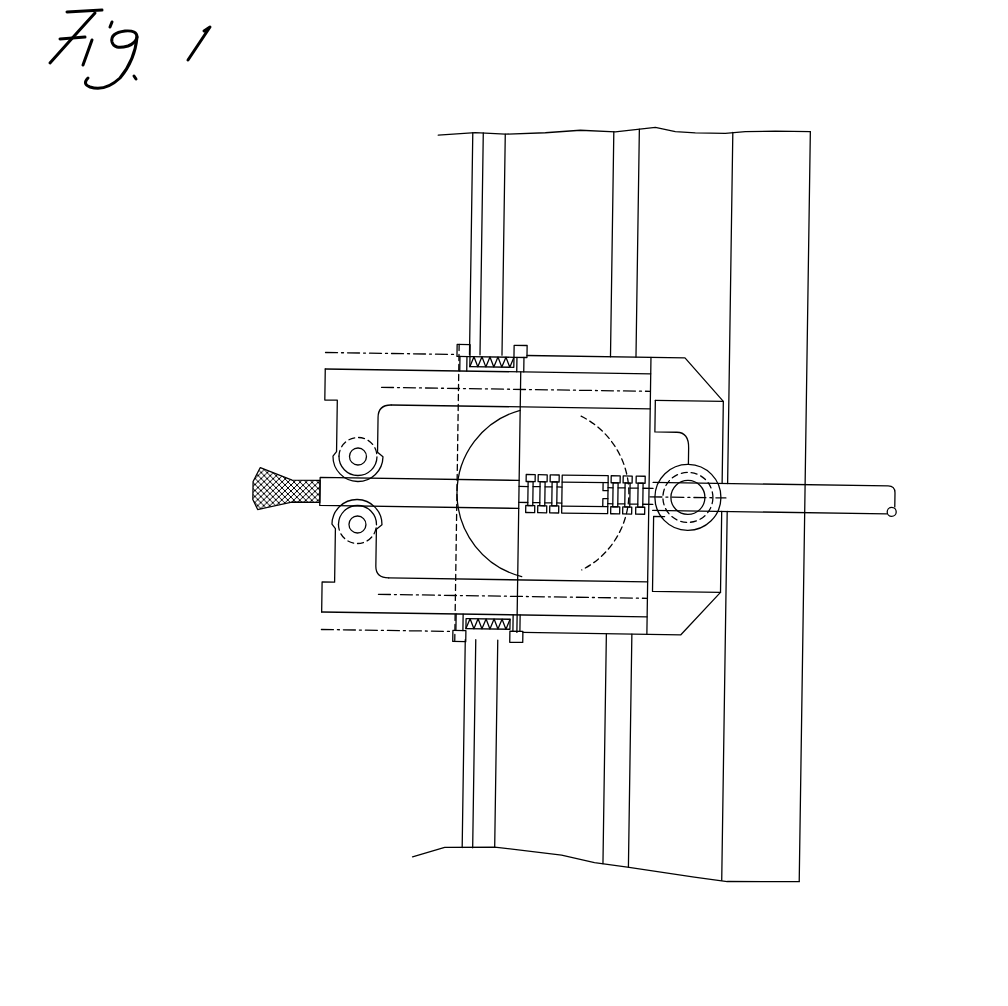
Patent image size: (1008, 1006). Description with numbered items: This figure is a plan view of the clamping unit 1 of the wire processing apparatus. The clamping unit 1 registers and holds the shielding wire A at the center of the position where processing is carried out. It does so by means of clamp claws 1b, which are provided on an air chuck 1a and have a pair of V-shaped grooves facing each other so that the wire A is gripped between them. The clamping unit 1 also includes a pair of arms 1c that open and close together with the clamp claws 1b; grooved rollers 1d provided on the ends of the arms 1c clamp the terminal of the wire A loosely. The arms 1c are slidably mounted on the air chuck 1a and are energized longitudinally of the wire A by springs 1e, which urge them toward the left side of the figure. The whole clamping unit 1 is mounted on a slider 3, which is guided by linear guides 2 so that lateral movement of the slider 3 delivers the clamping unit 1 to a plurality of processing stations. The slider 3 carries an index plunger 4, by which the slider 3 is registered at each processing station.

The clamping unit 1 is at (695, 615).
The air chuck 1a is at (496, 534).
The clamp claws 1b is at (566, 440).
The arms 1c is at (350, 393).
The grooved rollers 1d is at (332, 459).
The springs 1e is at (480, 353).
The linear guides 2 is at (614, 201).
The slider 3 is at (681, 378).
The index plunger 4 is at (704, 467).
The shielding wire A is at (843, 512).